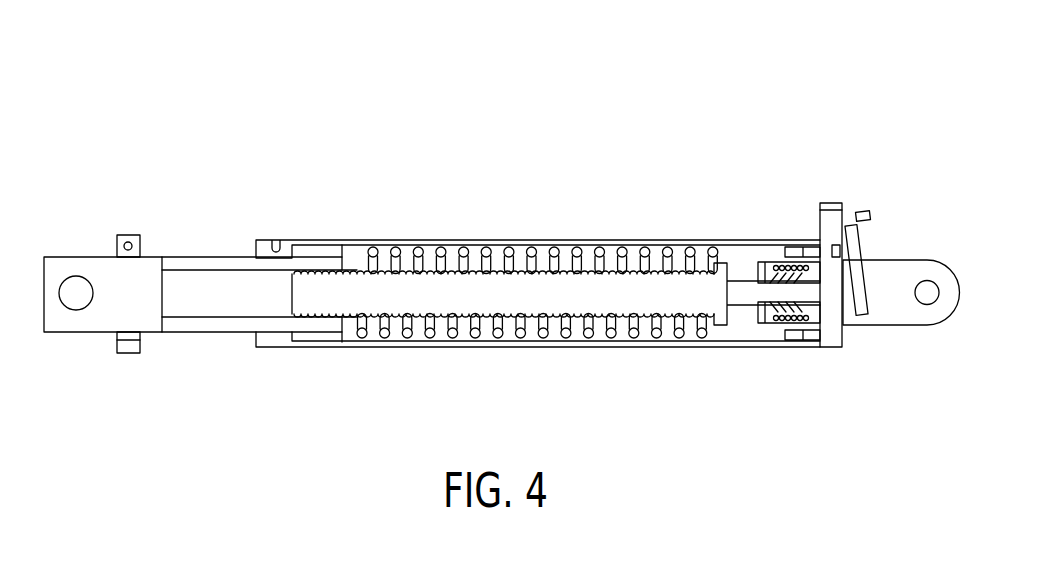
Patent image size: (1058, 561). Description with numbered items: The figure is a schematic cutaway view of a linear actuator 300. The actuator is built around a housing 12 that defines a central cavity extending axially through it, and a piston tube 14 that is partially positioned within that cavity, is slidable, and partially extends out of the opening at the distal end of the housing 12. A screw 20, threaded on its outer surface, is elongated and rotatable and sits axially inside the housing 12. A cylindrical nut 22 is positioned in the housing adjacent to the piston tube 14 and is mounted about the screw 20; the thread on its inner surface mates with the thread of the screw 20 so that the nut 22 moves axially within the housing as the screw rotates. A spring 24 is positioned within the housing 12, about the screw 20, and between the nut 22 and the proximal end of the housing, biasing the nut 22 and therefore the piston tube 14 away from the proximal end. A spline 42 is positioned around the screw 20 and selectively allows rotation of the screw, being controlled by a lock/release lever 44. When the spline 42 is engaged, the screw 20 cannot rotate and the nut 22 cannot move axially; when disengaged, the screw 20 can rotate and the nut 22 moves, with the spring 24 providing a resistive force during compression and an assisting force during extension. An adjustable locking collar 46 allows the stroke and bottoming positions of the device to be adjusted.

The linear actuator 300 is at (658, 142).
The adjustable locking collar 46 is at (114, 216).
The piston tube 14 is at (210, 244).
The housing 12 is at (410, 230).
The nut 22 is at (348, 352).
The screw 20 is at (689, 306).
The spring 24 is at (567, 327).
The lock/release lever 44 is at (884, 235).
The spline 42 is at (857, 323).